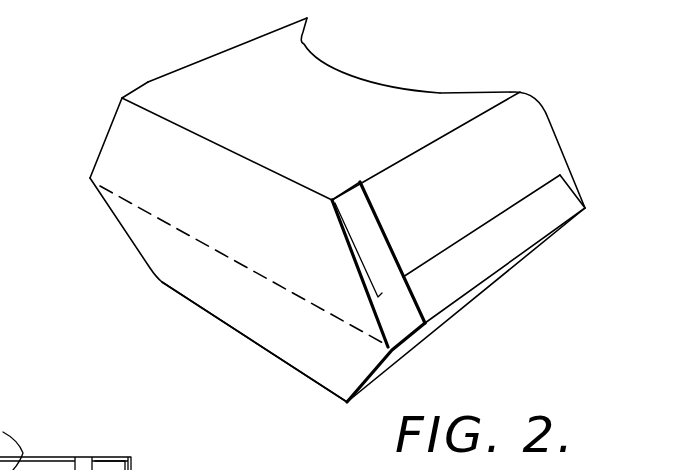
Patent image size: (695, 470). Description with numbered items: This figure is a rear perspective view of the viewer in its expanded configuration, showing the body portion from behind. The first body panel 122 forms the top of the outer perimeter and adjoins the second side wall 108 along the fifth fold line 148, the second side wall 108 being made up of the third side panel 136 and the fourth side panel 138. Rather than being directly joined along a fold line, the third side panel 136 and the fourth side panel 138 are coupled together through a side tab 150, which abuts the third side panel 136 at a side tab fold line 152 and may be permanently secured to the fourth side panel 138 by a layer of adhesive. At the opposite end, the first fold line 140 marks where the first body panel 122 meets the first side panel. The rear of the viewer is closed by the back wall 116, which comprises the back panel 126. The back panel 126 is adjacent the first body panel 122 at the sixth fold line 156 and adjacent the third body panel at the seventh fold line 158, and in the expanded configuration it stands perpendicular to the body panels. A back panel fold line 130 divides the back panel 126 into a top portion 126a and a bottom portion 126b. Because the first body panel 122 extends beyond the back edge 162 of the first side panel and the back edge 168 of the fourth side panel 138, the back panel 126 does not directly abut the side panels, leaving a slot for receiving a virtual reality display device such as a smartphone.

The second side wall 108 is at (539, 135).
The back wall 116 is at (100, 183).
The first body panel 122 is at (275, 122).
The back panel 126 is at (233, 326).
The top portion 126a is at (162, 196).
The bottom portion 126b is at (272, 346).
The back panel fold line 130 is at (267, 271).
The third side panel 136 is at (461, 312).
The fourth side panel 138 is at (442, 184).
The first fold line 140 is at (194, 62).
The fifth fold line 148 is at (399, 158).
The side tab 150 is at (479, 254).
The side tab fold line 152 is at (552, 234).
The sixth fold line 156 is at (189, 128).
The seventh fold line 158 is at (170, 292).
The back edge 162 is at (108, 462).
The back edge 168 is at (364, 197).